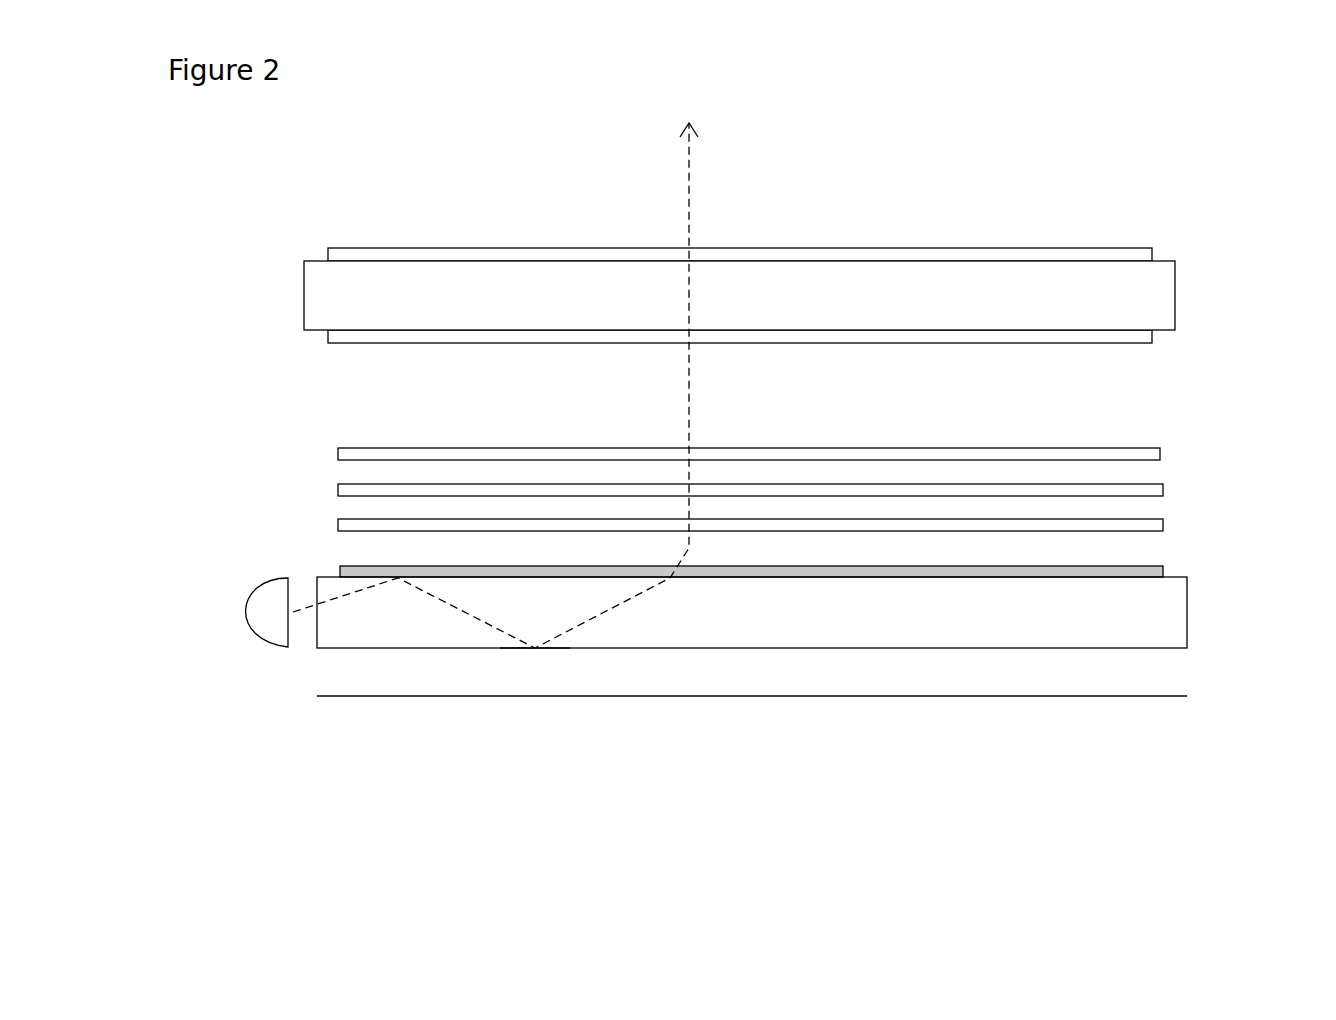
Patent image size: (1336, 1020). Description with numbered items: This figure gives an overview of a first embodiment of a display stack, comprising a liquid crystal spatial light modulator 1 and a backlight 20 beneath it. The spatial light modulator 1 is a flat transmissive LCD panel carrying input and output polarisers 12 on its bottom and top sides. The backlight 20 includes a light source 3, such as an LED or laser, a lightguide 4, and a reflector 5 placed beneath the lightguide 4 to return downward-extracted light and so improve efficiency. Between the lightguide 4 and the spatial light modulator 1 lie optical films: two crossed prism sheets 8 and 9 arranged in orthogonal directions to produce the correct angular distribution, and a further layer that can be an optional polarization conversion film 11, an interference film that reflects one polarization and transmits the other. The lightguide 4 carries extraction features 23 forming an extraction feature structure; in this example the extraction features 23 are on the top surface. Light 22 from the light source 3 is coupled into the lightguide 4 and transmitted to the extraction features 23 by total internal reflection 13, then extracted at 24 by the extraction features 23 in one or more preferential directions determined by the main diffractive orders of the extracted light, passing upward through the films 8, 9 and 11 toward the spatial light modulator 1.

The liquid crystal spatial light modulator 1 is at (769, 299).
The input and output polarisers 12 is at (354, 332).
The backlight 20 is at (710, 473).
The polarization conversion film 11 is at (338, 449).
The top prism sheet 9 is at (338, 485).
The prism sheet 8 is at (338, 522).
The extraction features 23 is at (555, 572).
The extraction point 24 is at (670, 573).
The lightguide 4 is at (315, 638).
The total internal reflection 13 is at (533, 646).
The reflector 5 is at (395, 693).
The light source 3 is at (233, 612).
The light 22 is at (689, 183).